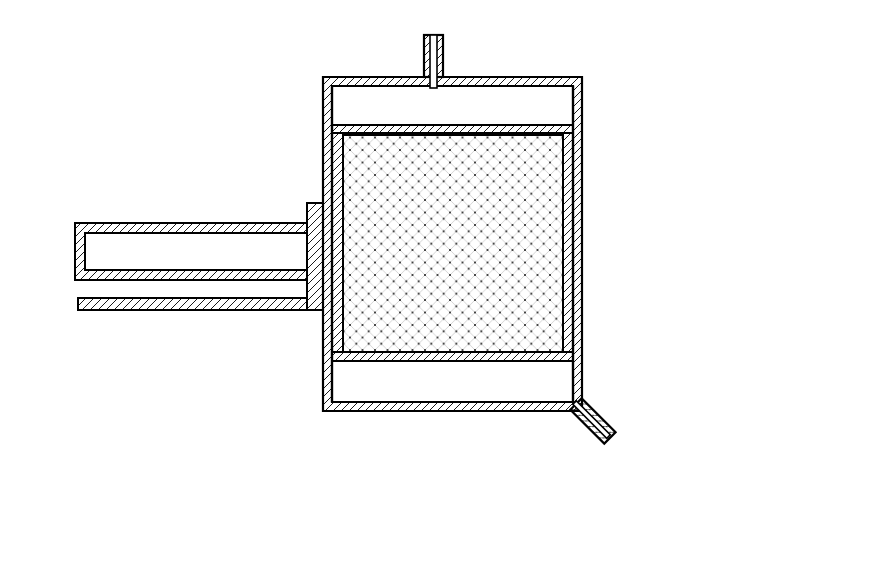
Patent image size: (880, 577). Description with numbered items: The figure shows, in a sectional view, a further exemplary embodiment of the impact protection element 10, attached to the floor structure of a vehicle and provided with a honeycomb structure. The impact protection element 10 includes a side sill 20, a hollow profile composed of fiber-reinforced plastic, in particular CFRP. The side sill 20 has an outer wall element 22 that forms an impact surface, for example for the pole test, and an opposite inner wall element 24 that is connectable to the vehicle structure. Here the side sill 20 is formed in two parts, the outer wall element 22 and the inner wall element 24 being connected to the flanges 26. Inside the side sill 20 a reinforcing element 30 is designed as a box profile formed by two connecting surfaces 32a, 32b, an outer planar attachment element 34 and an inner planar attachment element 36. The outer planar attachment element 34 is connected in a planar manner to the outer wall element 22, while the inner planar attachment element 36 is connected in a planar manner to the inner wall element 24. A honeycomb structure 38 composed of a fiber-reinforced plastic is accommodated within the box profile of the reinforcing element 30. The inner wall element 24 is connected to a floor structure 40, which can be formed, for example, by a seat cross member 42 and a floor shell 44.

The impact protection element 10 is at (626, 81).
The side sill 20 is at (561, 77).
The outer wall element 22 is at (583, 128).
The inner wall element 24 is at (323, 124).
The flanges 26 is at (424, 57).
The reinforcing element 30 is at (462, 114).
The connecting surface 32a is at (513, 126).
The connecting surface 32b is at (455, 362).
The outer planar attachment element 34 is at (565, 262).
The inner planar attachment element 36 is at (361, 309).
The honeycomb structure 38 is at (547, 299).
The floor structure 40 is at (96, 322).
The seat cross member 42 is at (143, 223).
The floor shell 44 is at (160, 310).